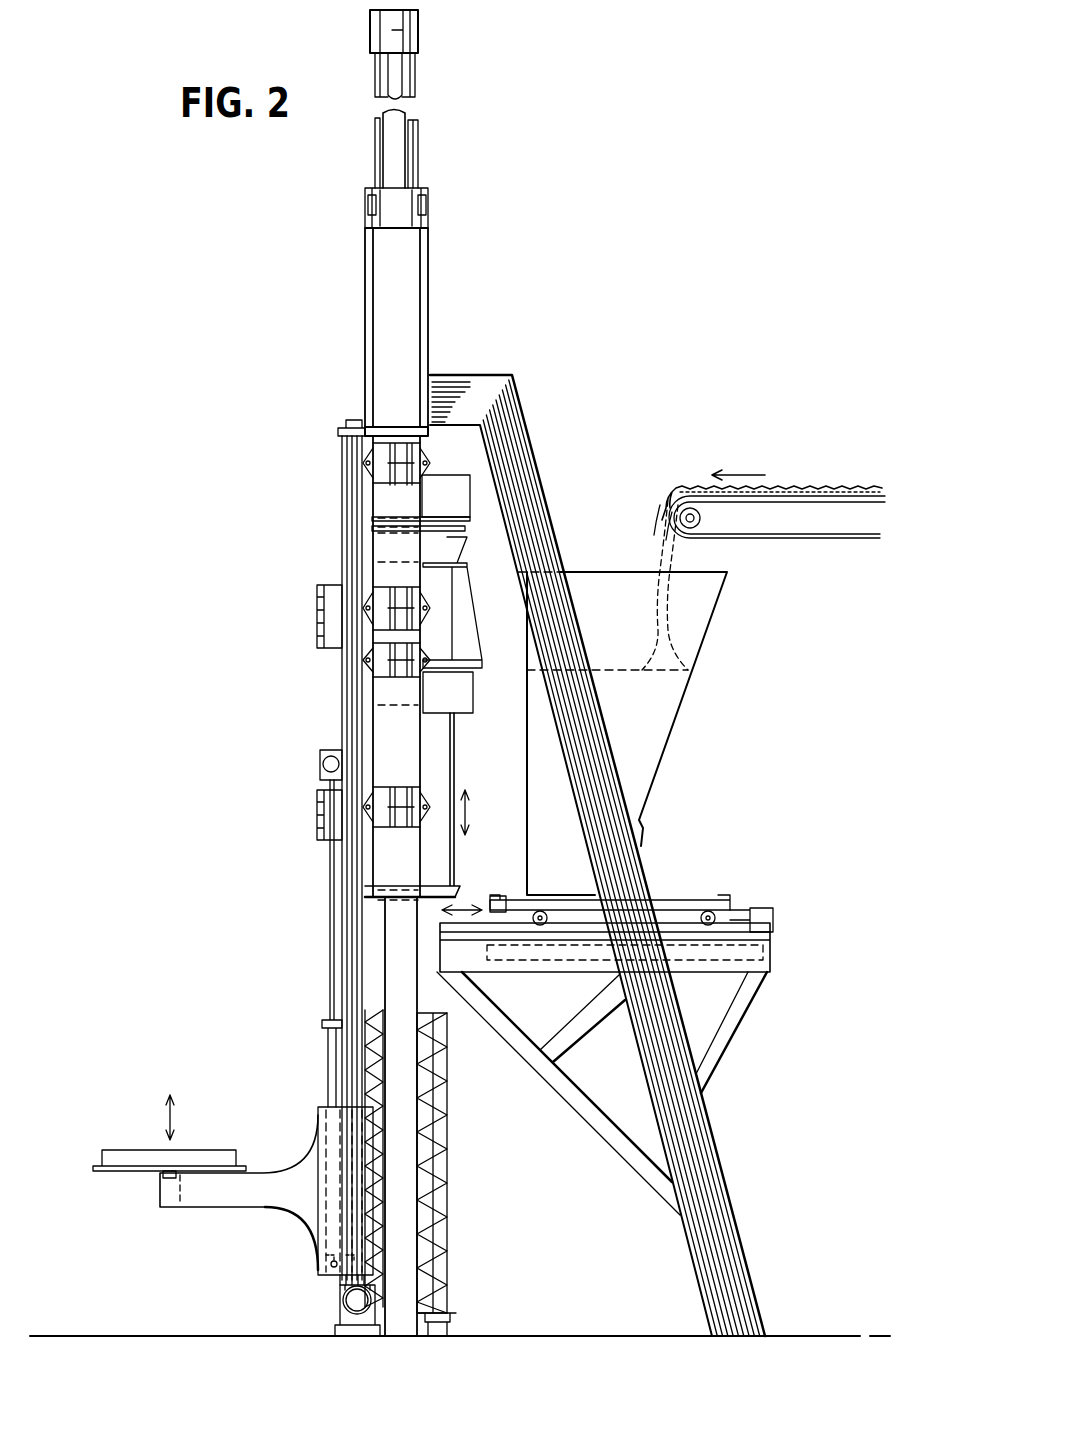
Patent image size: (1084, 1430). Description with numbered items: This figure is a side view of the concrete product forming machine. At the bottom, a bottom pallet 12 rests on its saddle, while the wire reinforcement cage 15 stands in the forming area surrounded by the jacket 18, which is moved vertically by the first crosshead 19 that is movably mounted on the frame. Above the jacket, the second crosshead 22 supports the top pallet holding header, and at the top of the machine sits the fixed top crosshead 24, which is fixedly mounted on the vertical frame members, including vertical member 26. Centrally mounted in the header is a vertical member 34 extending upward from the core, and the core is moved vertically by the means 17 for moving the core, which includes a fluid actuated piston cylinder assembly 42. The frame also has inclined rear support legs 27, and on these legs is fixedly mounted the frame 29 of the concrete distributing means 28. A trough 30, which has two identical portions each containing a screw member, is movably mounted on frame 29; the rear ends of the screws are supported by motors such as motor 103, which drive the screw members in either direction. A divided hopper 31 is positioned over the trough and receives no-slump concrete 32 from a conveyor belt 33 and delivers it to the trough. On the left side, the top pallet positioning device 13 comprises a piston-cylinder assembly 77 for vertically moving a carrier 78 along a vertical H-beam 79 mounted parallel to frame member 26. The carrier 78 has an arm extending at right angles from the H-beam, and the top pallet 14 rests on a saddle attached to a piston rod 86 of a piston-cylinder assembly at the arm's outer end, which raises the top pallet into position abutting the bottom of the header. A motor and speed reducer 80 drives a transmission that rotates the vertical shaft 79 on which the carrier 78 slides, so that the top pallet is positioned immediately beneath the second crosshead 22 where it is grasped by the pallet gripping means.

The bottom pallet 12 is at (448, 1325).
The top pallet positioning device 13 is at (298, 1238).
The top pallet 14 is at (140, 1150).
The wire reinforcement cage 15 is at (450, 1106).
The means for moving the core vertically 17 is at (428, 165).
The jacket 18 is at (450, 752).
The first crosshead 19 is at (470, 695).
The second crosshead 22 is at (453, 478).
The fixed top crosshead 24 is at (365, 312).
The vertical member 26 is at (450, 1170).
The inclined rear support legs 27 is at (537, 446).
The concrete distributing means 28 is at (694, 885).
The frame 29 is at (505, 975).
The trough 30 is at (512, 898).
The divided hopper 31 is at (695, 632).
The no-slump concrete 32 is at (662, 535).
The conveyor belt 33 is at (802, 497).
The vertical member 34 is at (410, 80).
The fluid actuated piston cylinder assembly 42 is at (393, 148).
The piston-cylinder assembly 77 is at (328, 1056).
The carrier 78 is at (272, 1198).
The vertical H-beam 79 is at (342, 940).
The motor and speed reducer 80 is at (348, 1300).
The piston rod 86 is at (162, 1174).
The motor 103 is at (762, 906).